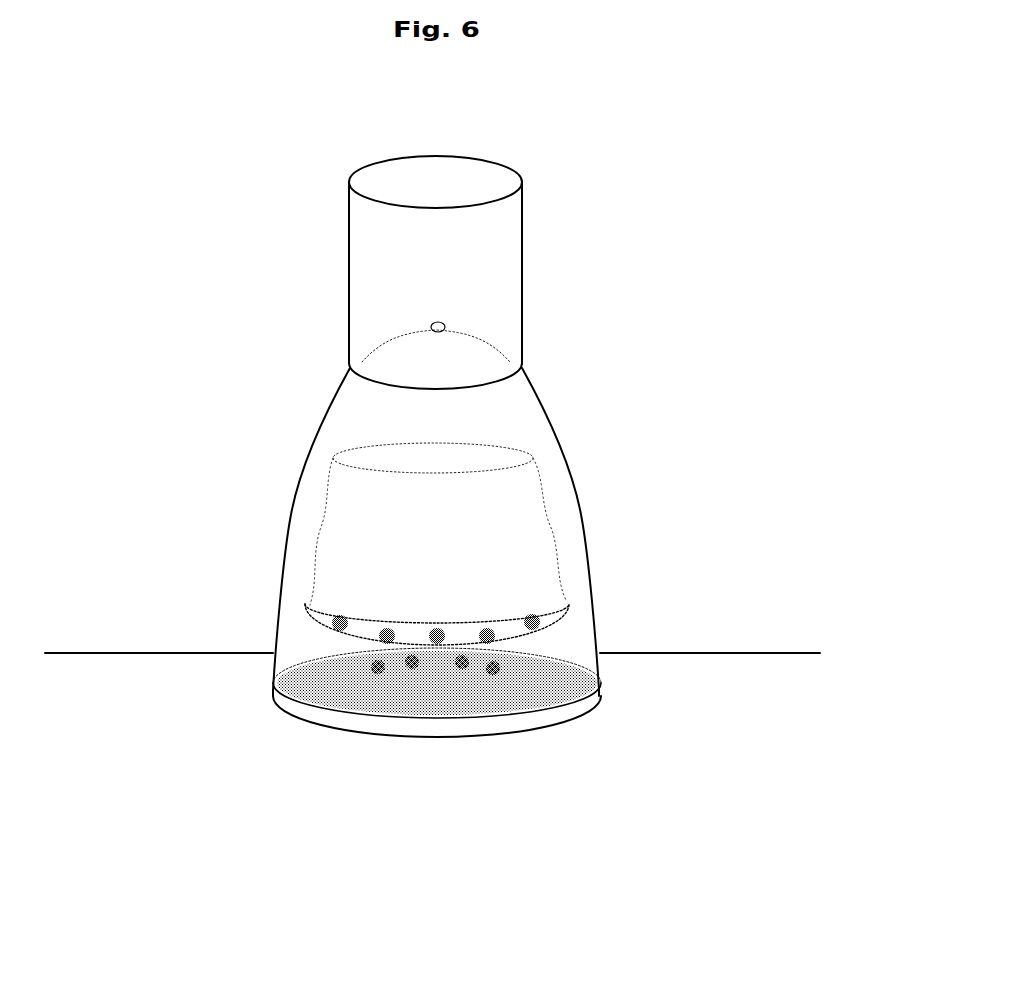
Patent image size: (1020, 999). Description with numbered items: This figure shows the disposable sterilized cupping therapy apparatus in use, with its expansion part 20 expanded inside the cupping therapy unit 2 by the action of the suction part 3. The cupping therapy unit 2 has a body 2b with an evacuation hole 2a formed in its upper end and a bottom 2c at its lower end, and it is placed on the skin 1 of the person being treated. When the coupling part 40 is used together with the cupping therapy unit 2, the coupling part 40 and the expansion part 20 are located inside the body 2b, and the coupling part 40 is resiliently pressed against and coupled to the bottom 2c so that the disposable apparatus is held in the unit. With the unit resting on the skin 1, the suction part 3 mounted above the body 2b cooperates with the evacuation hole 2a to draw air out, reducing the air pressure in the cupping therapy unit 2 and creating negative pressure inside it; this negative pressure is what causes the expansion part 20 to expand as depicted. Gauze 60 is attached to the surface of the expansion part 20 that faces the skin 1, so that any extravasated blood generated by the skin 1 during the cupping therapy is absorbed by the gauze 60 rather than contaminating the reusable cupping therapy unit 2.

The skin 1 is at (153, 653).
The cupping therapy unit 2 is at (596, 403).
The evacuation hole 2a is at (447, 323).
The body 2b is at (581, 490).
The bottom 2c is at (273, 699).
The suction part 3 is at (500, 262).
The expansion part 20 is at (560, 542).
The coupling part 40 is at (604, 702).
The gauze 60 is at (334, 622).